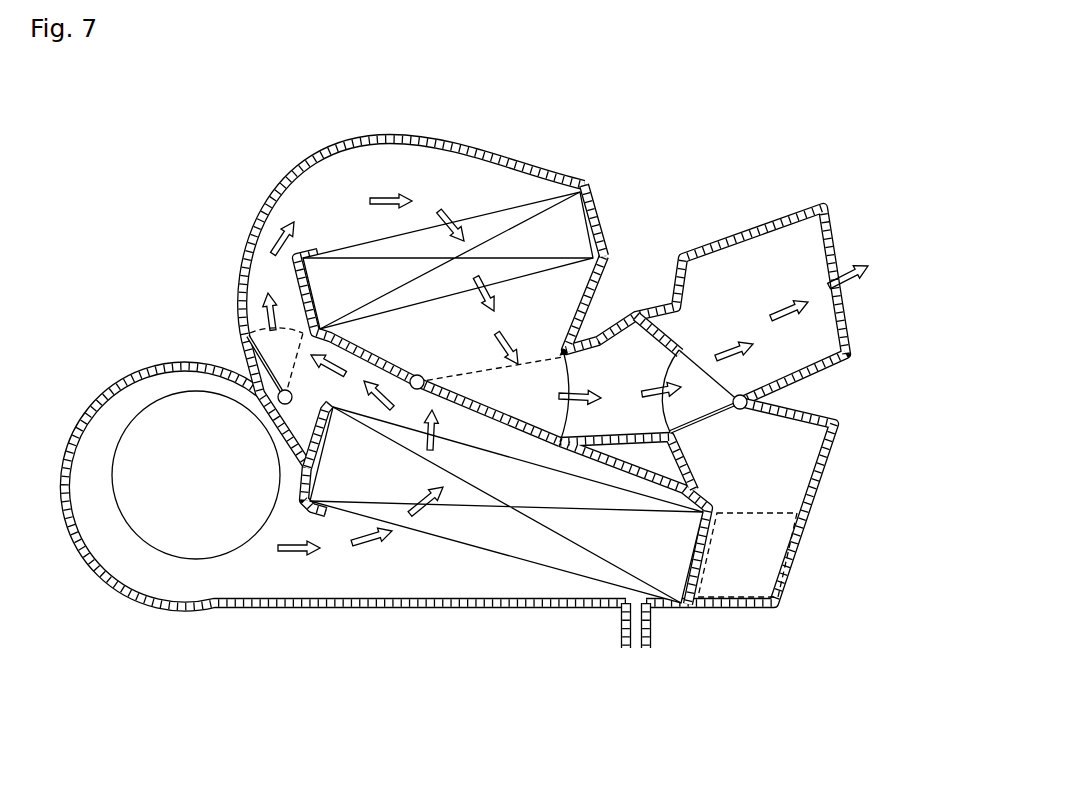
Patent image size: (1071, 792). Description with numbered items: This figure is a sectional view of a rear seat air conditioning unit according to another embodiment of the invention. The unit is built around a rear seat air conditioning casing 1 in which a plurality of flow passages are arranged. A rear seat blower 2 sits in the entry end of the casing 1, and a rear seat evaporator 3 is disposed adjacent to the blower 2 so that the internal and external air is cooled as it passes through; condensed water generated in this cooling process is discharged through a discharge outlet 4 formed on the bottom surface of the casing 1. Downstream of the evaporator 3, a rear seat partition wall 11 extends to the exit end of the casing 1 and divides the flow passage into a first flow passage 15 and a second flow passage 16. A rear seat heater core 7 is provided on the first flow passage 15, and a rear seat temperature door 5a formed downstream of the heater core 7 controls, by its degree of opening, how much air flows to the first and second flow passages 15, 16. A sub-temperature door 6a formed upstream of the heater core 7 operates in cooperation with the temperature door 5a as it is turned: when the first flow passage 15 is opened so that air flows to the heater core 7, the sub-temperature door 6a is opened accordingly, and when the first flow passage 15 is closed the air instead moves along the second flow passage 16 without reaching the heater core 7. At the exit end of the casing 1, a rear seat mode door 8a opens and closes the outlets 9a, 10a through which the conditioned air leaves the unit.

The rear seat air conditioning casing 1 is at (90, 401).
The rear seat blower 2 is at (180, 559).
The rear seat evaporator 3 is at (524, 543).
The discharge outlet 4 is at (638, 652).
The rear seat temperature door 5a is at (508, 414).
The sub-temperature door 6a is at (248, 353).
The rear seat heater core 7 is at (570, 233).
The rear seat mode door 8a is at (697, 417).
The outlet 9a is at (832, 243).
The outlet 10a is at (740, 515).
The rear seat partition wall 11 is at (410, 162).
The first flow passage 15 is at (349, 221).
The second flow passage 16 is at (542, 400).